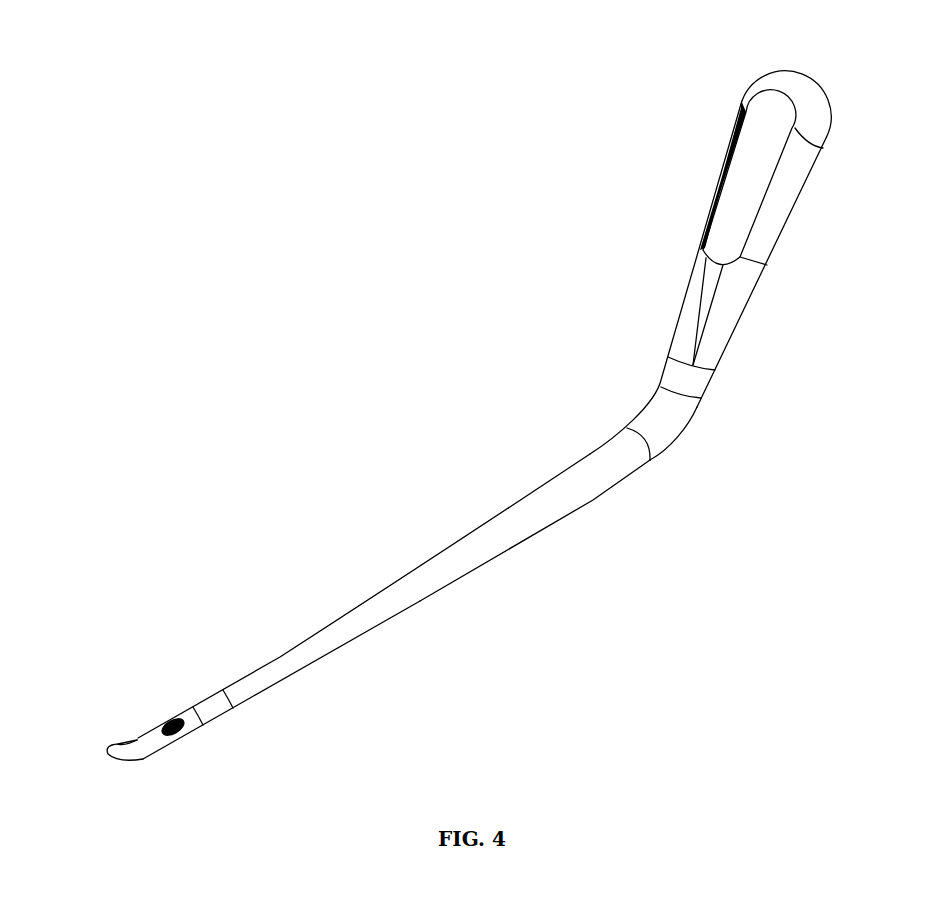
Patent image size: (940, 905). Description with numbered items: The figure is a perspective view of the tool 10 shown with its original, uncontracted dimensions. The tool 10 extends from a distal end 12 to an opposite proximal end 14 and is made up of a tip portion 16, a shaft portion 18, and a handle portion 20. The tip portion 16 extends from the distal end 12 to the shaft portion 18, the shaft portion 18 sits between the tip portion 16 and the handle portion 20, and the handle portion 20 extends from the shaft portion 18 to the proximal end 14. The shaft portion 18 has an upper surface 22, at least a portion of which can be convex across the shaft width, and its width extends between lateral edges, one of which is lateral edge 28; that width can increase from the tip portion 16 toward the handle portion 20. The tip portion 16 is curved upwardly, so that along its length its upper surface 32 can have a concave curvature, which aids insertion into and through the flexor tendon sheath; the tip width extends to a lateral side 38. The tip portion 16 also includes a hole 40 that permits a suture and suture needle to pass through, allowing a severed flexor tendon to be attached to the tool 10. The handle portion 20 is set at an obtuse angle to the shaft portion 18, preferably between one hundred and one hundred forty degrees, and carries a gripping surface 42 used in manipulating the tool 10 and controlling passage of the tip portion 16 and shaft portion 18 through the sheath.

The tool 10 is at (497, 300).
The distal end 12 is at (117, 747).
The proximal end 14 is at (797, 75).
The tip portion 16 is at (150, 749).
The shaft portion 18 is at (570, 502).
The handle portion 20 is at (778, 195).
The upper surface 22 is at (483, 552).
The lateral edge 28 is at (337, 653).
The upper surface 32 is at (136, 740).
The lateral side 38 is at (152, 750).
The hole 40 is at (166, 721).
The gripping surface 42 is at (757, 162).